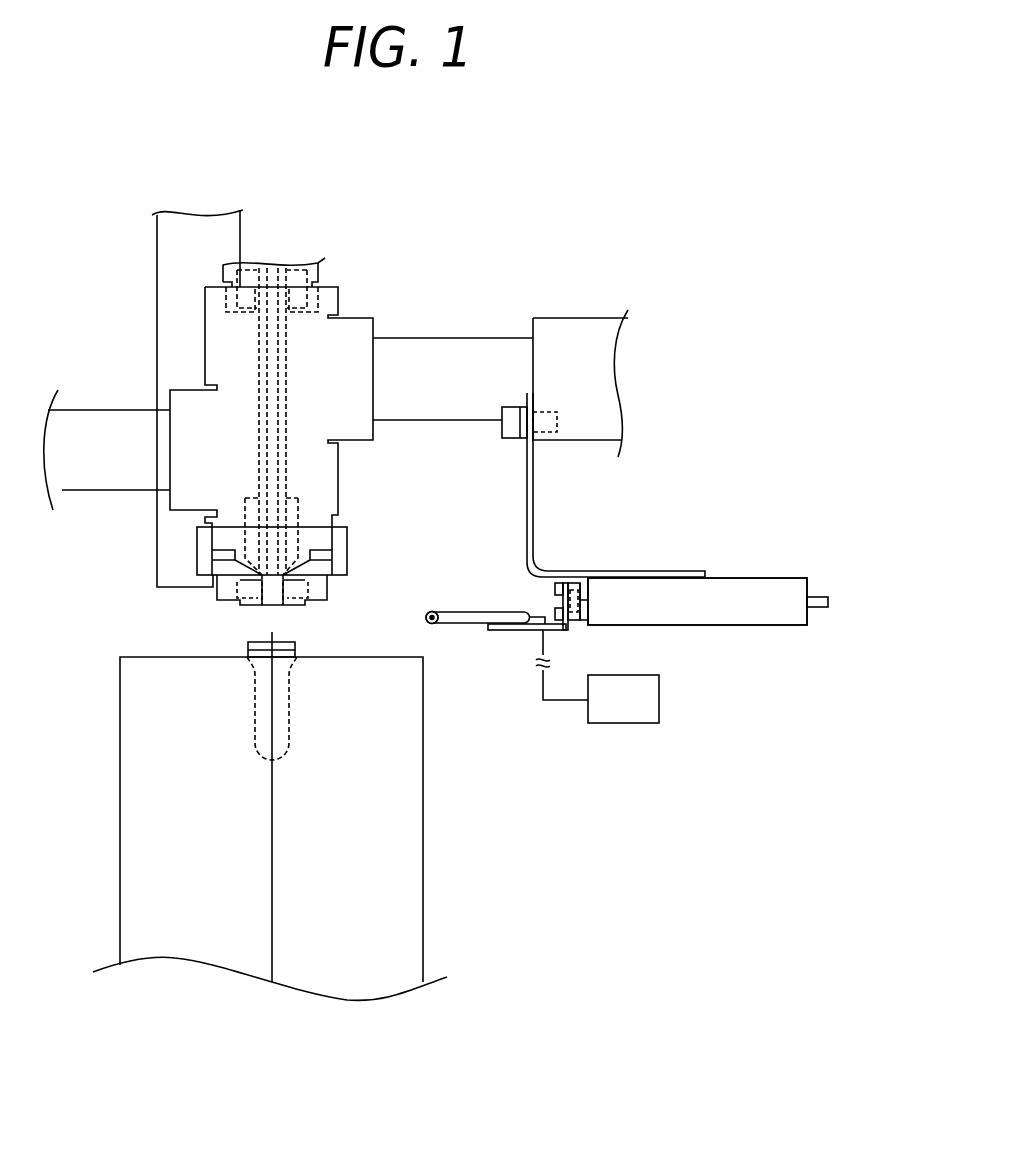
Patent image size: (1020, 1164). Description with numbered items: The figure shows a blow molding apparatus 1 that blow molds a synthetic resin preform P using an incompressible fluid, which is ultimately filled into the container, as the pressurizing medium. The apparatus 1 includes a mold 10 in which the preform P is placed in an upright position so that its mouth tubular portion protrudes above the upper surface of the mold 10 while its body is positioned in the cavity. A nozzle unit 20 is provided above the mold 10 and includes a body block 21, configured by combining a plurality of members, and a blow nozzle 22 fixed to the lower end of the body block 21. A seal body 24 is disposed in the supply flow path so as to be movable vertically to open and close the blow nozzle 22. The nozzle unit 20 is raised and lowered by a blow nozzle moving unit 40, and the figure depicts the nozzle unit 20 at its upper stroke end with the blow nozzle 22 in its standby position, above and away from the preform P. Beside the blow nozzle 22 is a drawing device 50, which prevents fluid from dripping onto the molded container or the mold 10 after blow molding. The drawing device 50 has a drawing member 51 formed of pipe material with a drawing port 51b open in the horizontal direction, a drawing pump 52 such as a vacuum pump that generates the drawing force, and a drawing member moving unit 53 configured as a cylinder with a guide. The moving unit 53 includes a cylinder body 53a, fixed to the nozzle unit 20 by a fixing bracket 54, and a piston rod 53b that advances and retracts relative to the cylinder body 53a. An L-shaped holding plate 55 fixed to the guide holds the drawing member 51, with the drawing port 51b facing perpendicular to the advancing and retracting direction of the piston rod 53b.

The blow molding apparatus 1 is at (682, 211).
The mold 10 is at (428, 780).
The preform P is at (300, 642).
The nozzle unit 20 is at (343, 490).
The body block 21 is at (343, 460).
The blow nozzle 22 is at (288, 583).
The seal body 24 is at (301, 517).
The blow nozzle moving unit 40 is at (176, 262).
The drawing device 50 is at (686, 657).
The drawing member 51 is at (467, 606).
The drawing port 51b is at (433, 626).
The drawing pump 52 is at (625, 713).
The drawing member moving unit 53 is at (754, 575).
The cylinder body 53a is at (765, 620).
The piston rod 53b is at (585, 580).
The fixing bracket 54 is at (535, 488).
The holding plate 55 is at (505, 631).